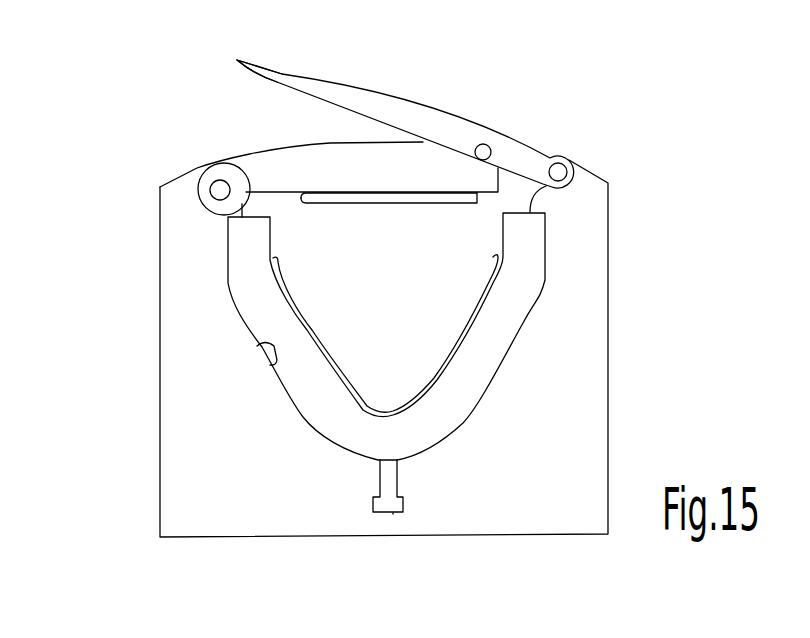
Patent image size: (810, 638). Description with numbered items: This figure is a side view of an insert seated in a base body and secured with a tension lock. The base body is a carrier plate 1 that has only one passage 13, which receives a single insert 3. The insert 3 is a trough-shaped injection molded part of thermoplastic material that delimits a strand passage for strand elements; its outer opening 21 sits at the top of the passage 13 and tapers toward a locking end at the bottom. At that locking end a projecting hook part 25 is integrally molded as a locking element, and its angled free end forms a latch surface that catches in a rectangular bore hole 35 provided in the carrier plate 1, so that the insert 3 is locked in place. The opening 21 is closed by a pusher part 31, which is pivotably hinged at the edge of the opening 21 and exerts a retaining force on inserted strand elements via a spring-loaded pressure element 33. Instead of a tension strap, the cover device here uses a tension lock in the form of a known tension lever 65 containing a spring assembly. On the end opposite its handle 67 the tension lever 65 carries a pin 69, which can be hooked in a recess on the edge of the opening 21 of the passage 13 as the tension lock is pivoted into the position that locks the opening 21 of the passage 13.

The carrier plate 1 is at (582, 283).
The insert 3 is at (463, 385).
The passage 13 is at (258, 346).
The opening 21 is at (242, 163).
The hook part 25 is at (398, 477).
The pusher part 31 is at (350, 173).
The spring-loaded pressure element 33 is at (398, 200).
The rectangular bore hole 35 is at (393, 513).
The tension lever 65 is at (433, 122).
The handle 67 is at (272, 72).
The pin 69 is at (569, 163).